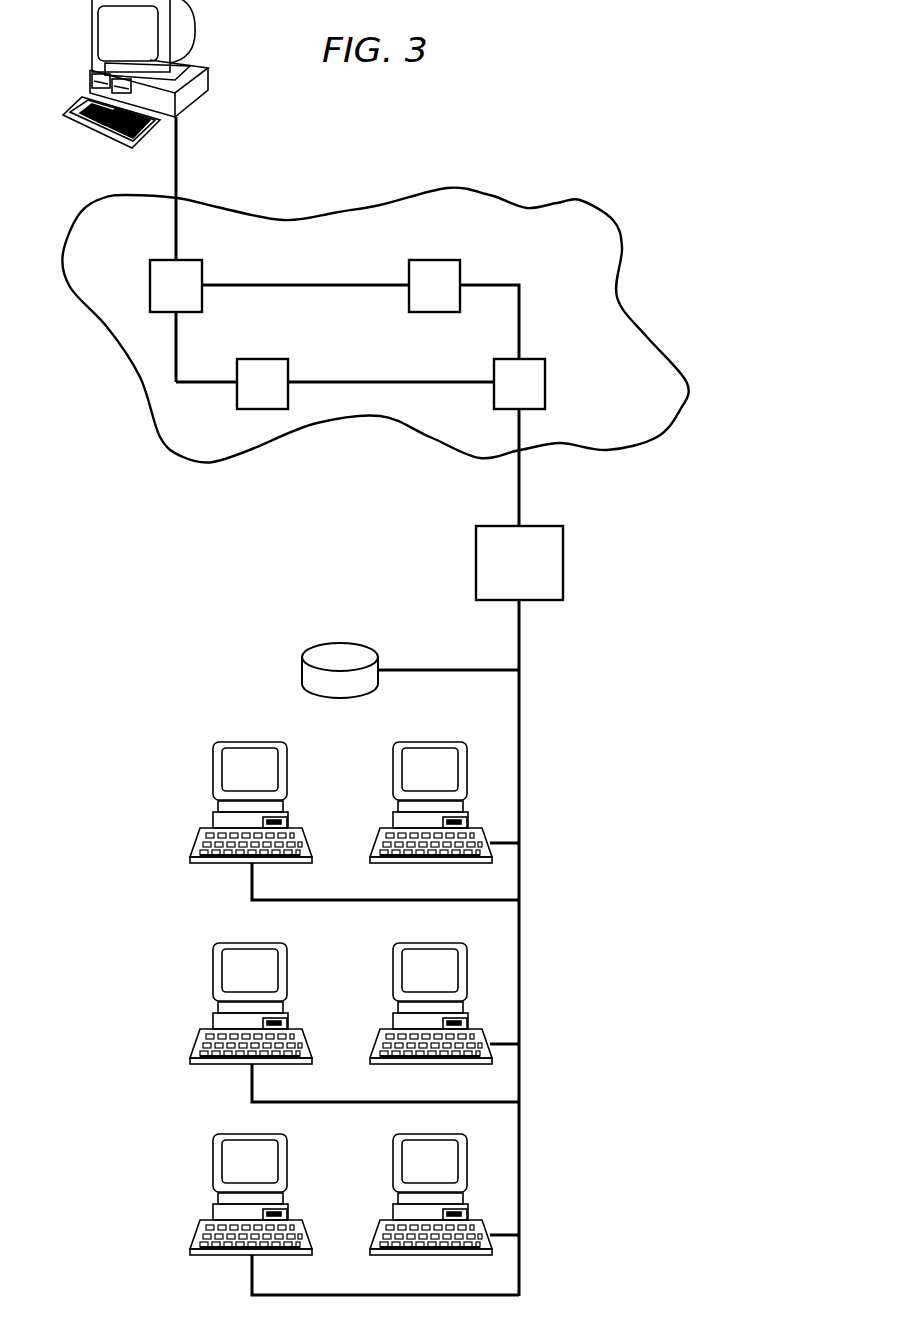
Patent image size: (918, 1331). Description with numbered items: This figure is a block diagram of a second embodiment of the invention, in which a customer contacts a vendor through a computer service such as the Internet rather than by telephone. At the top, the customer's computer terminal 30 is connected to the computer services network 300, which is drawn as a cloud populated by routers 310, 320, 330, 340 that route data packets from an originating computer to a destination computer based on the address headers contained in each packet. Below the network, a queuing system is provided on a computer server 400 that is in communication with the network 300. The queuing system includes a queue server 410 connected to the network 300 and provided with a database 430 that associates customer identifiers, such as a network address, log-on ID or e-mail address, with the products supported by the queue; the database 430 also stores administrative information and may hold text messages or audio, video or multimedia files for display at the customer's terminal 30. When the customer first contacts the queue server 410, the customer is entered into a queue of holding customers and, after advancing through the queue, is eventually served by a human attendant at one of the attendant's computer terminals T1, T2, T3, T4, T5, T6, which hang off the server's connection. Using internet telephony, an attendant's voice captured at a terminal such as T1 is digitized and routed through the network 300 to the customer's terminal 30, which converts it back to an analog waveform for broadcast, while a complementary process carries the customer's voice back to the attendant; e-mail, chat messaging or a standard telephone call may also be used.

The customer's computer terminal 30 is at (96, 25).
The computer services network 300 is at (593, 238).
The router 310 is at (202, 271).
The router 320 is at (288, 370).
The router 330 is at (460, 271).
The router 340 is at (545, 386).
The computer server 400 is at (276, 560).
The queue server 410 is at (563, 553).
The database 430 is at (339, 655).
The attendant's computer terminal T1 is at (213, 765).
The attendant's computer terminal T2 is at (393, 765).
The attendant's computer terminal T3 is at (213, 966).
The attendant's computer terminal T4 is at (393, 966).
The attendant's computer terminal T5 is at (213, 1157).
The attendant's computer terminal T6 is at (393, 1157).